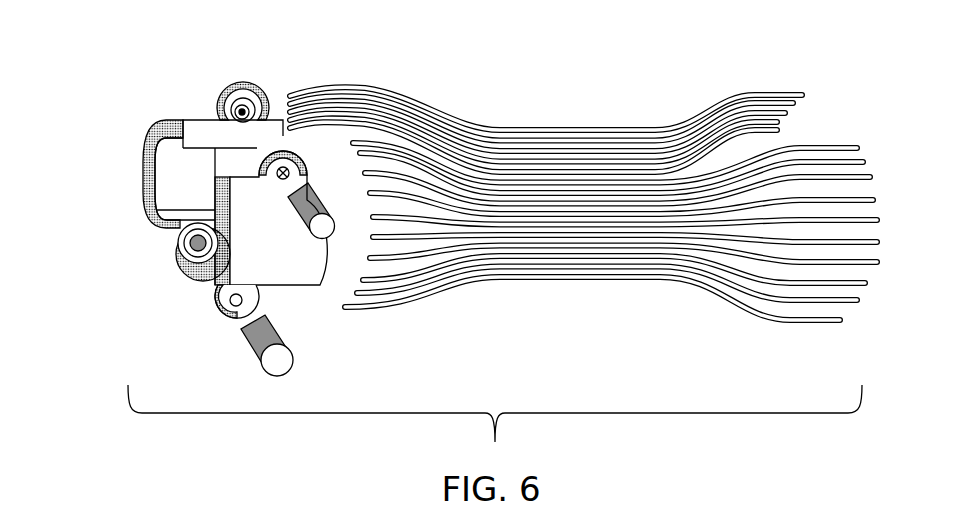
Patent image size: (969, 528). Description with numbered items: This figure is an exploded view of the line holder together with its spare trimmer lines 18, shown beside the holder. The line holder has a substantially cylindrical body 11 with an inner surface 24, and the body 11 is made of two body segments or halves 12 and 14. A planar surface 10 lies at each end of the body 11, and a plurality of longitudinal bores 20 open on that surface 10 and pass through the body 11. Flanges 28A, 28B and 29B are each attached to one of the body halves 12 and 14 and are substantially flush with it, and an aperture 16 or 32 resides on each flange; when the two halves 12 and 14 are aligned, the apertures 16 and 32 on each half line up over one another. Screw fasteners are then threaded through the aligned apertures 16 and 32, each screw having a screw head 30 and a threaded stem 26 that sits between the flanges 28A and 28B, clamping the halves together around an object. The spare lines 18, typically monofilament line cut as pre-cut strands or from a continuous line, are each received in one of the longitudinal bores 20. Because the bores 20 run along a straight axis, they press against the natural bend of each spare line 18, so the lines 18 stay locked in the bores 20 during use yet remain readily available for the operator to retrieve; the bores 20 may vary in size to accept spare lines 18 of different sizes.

The surface 10 is at (168, 118).
The body 11 is at (138, 183).
The body half 12 is at (303, 278).
The body half 14 is at (197, 118).
The aperture 16 is at (280, 178).
The spare trimmer lines 18 is at (350, 312).
The longitudinal bores 20 is at (160, 124).
The inner surface 24 is at (145, 193).
The threaded stem 26 is at (297, 198).
The flange 28A is at (258, 150).
The flange 28B is at (239, 84).
The flange 29B is at (172, 244).
The screw head 30 is at (314, 236).
The aperture 32 is at (268, 97).